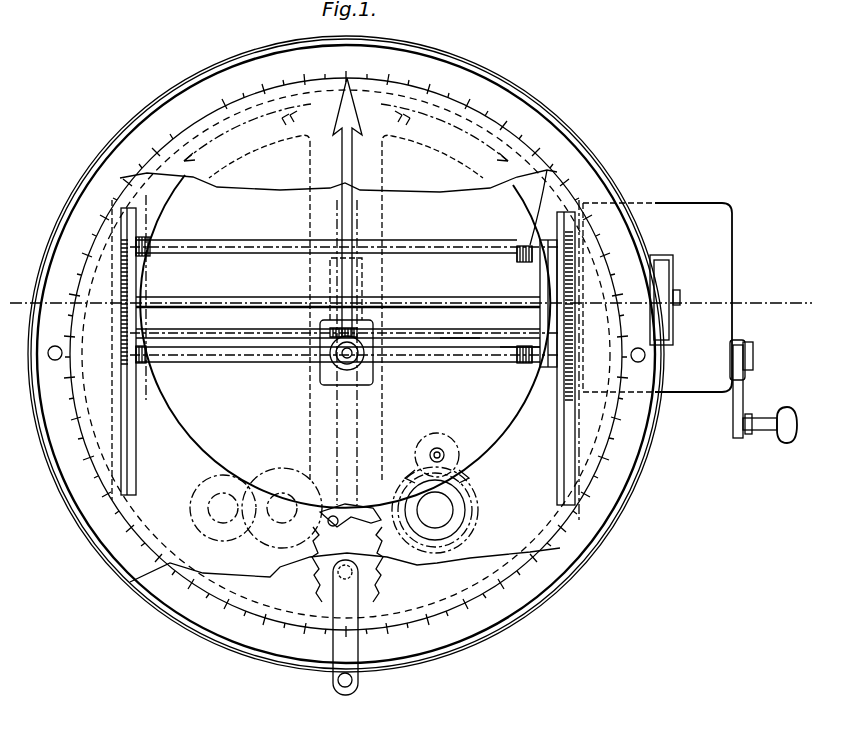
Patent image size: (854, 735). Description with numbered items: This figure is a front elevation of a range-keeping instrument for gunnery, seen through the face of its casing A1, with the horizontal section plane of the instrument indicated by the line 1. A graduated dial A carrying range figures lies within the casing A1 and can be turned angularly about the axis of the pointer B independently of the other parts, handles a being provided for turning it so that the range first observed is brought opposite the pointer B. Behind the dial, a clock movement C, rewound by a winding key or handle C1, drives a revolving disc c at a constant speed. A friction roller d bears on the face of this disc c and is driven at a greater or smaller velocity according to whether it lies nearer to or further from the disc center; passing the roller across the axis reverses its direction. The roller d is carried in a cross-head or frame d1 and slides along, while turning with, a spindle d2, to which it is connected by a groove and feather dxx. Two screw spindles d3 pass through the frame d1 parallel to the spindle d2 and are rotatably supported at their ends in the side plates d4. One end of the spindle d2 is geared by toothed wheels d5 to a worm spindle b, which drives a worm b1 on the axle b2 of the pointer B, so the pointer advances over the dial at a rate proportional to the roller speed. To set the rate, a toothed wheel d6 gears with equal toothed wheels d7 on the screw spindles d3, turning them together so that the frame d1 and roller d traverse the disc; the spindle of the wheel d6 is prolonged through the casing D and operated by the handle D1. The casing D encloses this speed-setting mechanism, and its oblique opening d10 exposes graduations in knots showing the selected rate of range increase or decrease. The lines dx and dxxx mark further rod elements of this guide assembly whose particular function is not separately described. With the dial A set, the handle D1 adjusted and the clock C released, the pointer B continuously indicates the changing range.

The section line 1 is at (411, 292).
The graduated dial A is at (346, 353).
The casing of the instrument A1 is at (346, 354).
The handles a is at (62, 353).
The pointer B is at (353, 165).
The worm spindle b is at (258, 360).
The worm b1 is at (300, 344).
The axle of the pointer b2 is at (364, 366).
The clock movement C is at (410, 568).
The revolving disc c is at (460, 470).
The winding key or handle C1 is at (352, 682).
The casing D is at (657, 297).
The handle D1 is at (788, 404).
The friction roller d is at (540, 270).
The cross-head or frame d1 is at (520, 342).
The spindle d2 is at (465, 332).
The screw spindles d3 is at (230, 255).
The frames or side plates d4 is at (130, 470).
The toothed wheels d5 is at (121, 318).
The toothed wheel d6 is at (570, 212).
The toothed wheels d7 is at (522, 246).
The oblique opening d10 is at (673, 318).
The bar dx is at (445, 268).
The groove and feather dxx is at (330, 270).
The upper rod dxxx is at (160, 256).